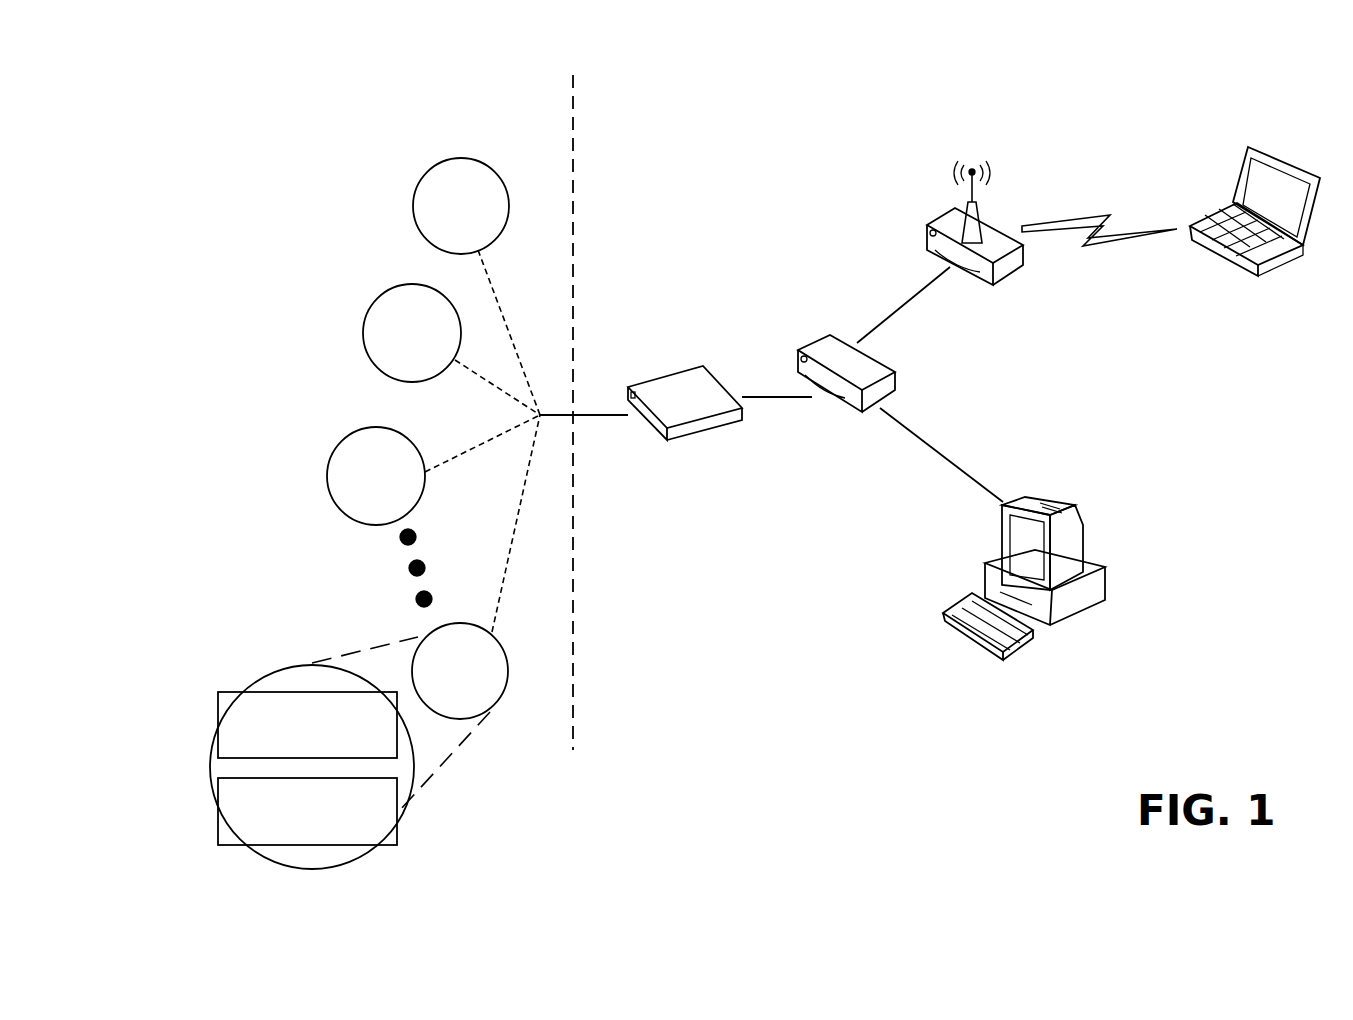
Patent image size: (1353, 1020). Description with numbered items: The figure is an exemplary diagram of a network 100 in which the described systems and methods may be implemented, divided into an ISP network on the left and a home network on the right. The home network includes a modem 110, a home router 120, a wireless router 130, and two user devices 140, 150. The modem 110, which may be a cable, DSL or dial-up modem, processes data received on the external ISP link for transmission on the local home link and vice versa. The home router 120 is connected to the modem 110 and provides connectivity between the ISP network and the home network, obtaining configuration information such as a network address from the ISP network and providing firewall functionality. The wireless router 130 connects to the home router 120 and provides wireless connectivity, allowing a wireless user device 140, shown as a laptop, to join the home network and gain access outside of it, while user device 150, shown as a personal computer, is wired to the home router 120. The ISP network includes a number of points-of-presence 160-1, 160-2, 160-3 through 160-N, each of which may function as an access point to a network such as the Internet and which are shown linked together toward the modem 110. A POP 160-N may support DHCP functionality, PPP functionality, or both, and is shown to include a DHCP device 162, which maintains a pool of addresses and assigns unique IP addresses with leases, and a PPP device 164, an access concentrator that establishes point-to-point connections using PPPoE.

The network 100 is at (312, 87).
The modem 110 is at (677, 373).
The home router 120 is at (830, 333).
The wireless router 130 is at (943, 215).
The user device 140 is at (1242, 165).
The user device 150 is at (1067, 510).
The point-of-presence (POP) 160-1 is at (413, 207).
The point-of-presence (POP) 160-2 is at (363, 335).
The point-of-presence (POP) 160-3 is at (327, 476).
The point-of-presence (POP) 160-N is at (502, 700).
The DHCP device 162 is at (397, 756).
The PPP device 164 is at (397, 812).